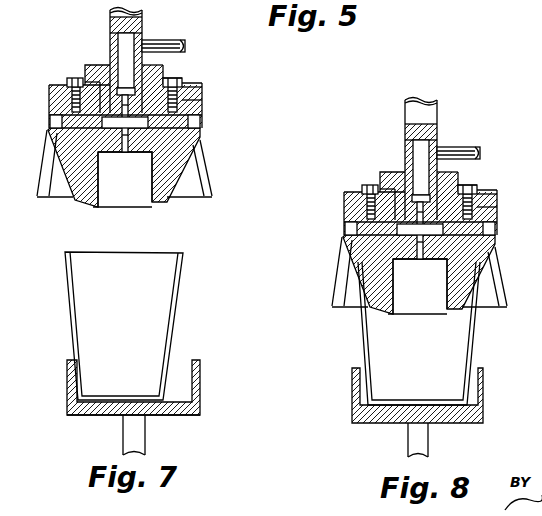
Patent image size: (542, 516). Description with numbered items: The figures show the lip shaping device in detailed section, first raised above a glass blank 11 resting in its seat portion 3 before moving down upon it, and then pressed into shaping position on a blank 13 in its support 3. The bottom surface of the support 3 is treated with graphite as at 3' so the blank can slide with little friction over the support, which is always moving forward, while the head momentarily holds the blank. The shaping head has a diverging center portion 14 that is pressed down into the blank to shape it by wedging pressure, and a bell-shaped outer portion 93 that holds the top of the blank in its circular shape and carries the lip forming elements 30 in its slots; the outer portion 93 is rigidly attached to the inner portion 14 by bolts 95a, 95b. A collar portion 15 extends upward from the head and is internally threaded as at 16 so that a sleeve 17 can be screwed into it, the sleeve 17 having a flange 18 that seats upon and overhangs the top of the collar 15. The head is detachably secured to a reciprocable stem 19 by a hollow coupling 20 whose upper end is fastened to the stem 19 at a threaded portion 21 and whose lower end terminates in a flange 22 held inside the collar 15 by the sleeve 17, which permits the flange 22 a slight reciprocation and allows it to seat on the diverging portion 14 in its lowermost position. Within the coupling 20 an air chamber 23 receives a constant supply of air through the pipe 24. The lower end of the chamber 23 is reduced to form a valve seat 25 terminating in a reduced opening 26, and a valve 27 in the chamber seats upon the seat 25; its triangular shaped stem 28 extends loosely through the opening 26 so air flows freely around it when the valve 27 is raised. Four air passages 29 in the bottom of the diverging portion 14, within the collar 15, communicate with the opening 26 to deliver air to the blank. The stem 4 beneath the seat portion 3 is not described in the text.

In FIG. 7, the seat portion 3 is at (146, 382).
In FIG. 8, the seat portion 3 is at (431, 395).
In FIG. 7, the graphite treatment 3' is at (141, 426).
In FIG. 7, the holder stem 4 is at (133, 432).
In FIG. 8, the holder stem 4 is at (423, 442).
In FIG. 7, the glass blank 11 is at (180, 302).
In FIG. 8, the glass blank 13 is at (470, 348).
In FIG. 7, the diverging center portion 14 is at (165, 203).
In FIG. 8, the diverging center portion 14 is at (419, 291).
In FIG. 7, the collar portion 15 is at (182, 80).
In FIG. 8, the collar portion 15 is at (479, 174).
In FIG. 7, the internal threads 16 is at (148, 77).
In FIG. 8, the internal threads 16 is at (480, 181).
In FIG. 7, the sleeve 17 is at (202, 115).
In FIG. 8, the sleeve 17 is at (496, 210).
In FIG. 7, the flange 18 is at (163, 65).
In FIG. 8, the flange 18 is at (462, 187).
In FIG. 7, the reciprocable stem 19 is at (110, 13).
In FIG. 8, the reciprocable stem 19 is at (422, 149).
In FIG. 7, the hollow coupling 20 is at (112, 30).
In FIG. 8, the hollow coupling 20 is at (438, 120).
In FIG. 7, the threaded portion 21 is at (142, 25).
In FIG. 8, the threaded portion 21 is at (438, 129).
In FIG. 7, the flange 22 is at (105, 108).
In FIG. 8, the flange 22 is at (404, 215).
In FIG. 7, the air chamber 23 is at (128, 43).
In FIG. 8, the air chamber 23 is at (395, 166).
In FIG. 7, the pipe 24 is at (160, 43).
In FIG. 8, the pipe 24 is at (469, 142).
In FIG. 7, the valve seat 25 is at (100, 92).
In FIG. 8, the valve seat 25 is at (408, 213).
In FIG. 7, the reduced opening 26 is at (110, 125).
In FIG. 8, the reduced opening 26 is at (420, 228).
In FIG. 7, the valve 27 is at (123, 90).
In FIG. 8, the valve 27 is at (390, 182).
In FIG. 7, the triangular shaped stem 28 is at (97, 200).
In FIG. 8, the triangular shaped stem 28 is at (467, 266).
In FIG. 7, the air passages 29 is at (125, 152).
In FIG. 8, the air passages 29 is at (419, 267).
In FIG. 7, the lip forming elements 30 is at (200, 137).
In FIG. 8, the lip forming elements 30 is at (419, 274).
In FIG. 7, the bell-shaped outer portion 93 is at (203, 100).
In FIG. 8, the bell-shaped outer portion 93 is at (505, 206).
In FIG. 7, the bolt 95a is at (183, 82).
In FIG. 8, the bolt 95a is at (498, 189).
In FIG. 7, the bolt 95b is at (70, 82).
In FIG. 8, the bolt 95b is at (342, 194).